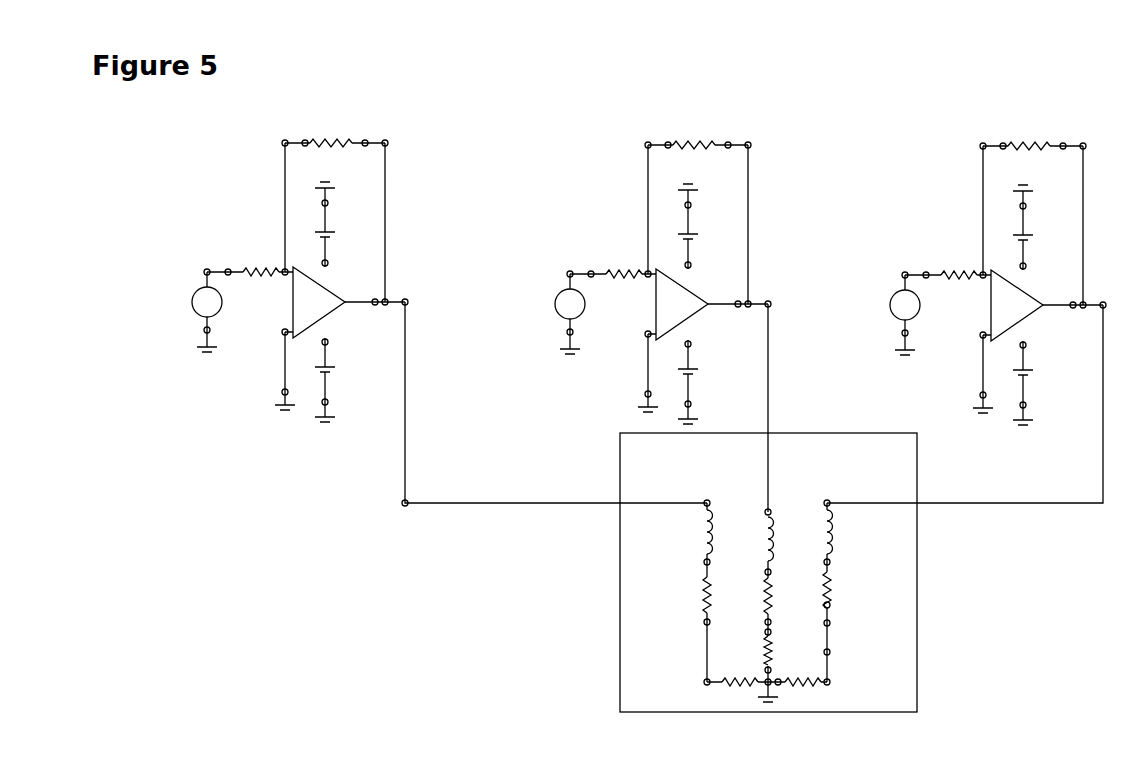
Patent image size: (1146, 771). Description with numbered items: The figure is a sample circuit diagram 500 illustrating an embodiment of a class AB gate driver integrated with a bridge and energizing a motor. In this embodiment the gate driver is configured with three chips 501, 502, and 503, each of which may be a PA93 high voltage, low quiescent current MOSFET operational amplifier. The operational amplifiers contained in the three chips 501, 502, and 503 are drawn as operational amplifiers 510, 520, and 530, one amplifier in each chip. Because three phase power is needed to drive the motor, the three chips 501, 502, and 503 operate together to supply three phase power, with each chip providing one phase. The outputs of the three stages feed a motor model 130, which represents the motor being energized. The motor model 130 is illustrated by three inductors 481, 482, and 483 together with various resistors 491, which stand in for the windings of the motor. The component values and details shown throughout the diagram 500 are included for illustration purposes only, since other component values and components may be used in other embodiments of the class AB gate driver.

The circuit diagram 500 is at (560, 133).
The chip 501 is at (343, 122).
The chip 502 is at (706, 122).
The chip 503 is at (1041, 122).
The operational amplifier 510 is at (278, 310).
The operational amplifier 520 is at (640, 313).
The operational amplifier 530 is at (975, 318).
The motor model 130 is at (616, 611).
The inductor 481 is at (845, 537).
The inductor 482 is at (780, 563).
The inductor 483 is at (702, 537).
The resistors 491 is at (757, 614).